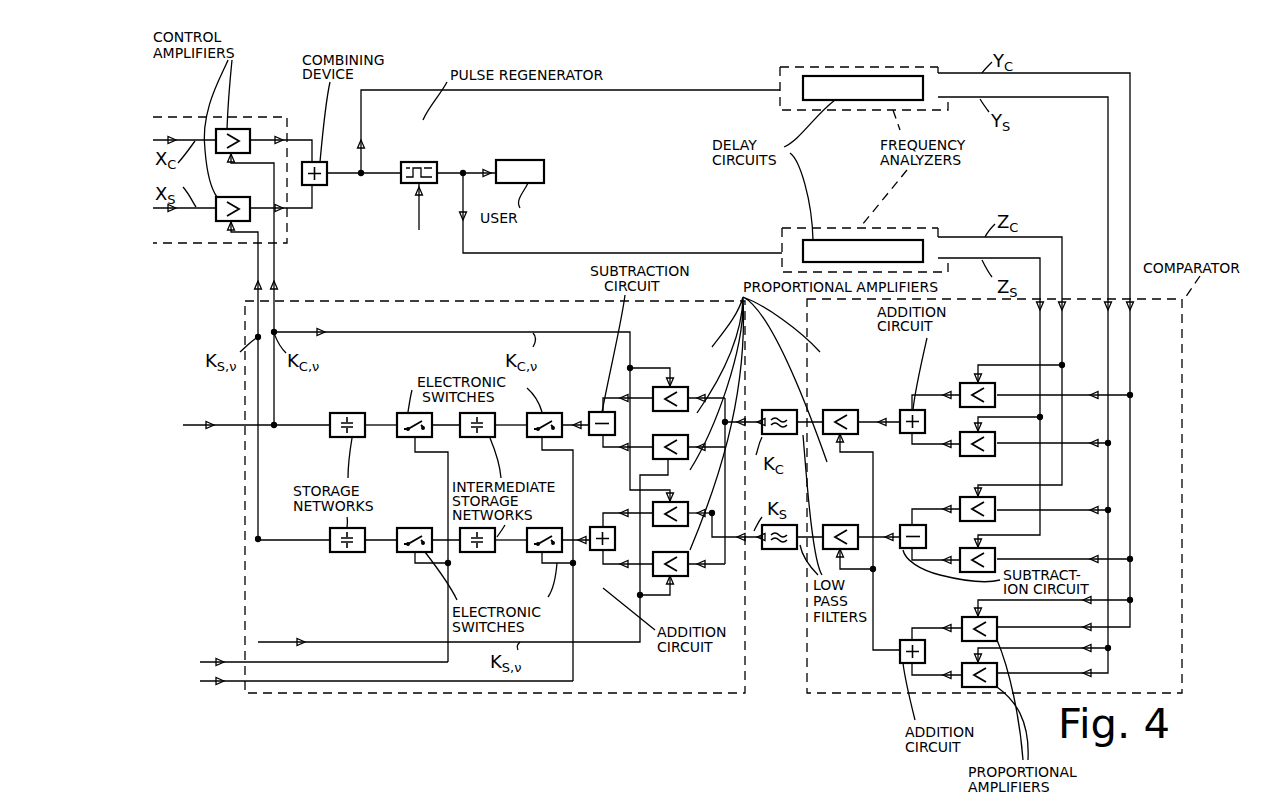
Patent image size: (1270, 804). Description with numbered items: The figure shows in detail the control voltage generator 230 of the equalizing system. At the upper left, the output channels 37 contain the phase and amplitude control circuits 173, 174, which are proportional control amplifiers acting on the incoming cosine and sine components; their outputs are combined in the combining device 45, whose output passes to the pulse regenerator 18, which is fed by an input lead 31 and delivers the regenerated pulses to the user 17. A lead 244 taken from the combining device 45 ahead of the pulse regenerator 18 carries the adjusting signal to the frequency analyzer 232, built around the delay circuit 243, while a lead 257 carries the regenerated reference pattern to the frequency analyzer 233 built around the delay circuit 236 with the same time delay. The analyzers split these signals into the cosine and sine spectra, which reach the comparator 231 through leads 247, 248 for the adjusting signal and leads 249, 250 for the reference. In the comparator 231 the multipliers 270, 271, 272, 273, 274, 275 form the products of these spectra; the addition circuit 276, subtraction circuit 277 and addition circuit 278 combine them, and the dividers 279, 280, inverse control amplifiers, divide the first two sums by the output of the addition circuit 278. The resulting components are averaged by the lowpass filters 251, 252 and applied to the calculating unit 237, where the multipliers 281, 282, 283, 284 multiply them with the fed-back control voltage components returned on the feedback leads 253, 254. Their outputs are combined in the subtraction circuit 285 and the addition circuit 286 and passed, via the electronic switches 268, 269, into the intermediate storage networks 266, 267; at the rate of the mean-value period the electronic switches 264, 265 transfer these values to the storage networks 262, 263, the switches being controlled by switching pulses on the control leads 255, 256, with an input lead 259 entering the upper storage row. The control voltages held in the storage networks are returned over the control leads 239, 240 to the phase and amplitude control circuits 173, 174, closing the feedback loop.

The user 17 is at (522, 160).
The pulse regenerator 18 is at (427, 162).
The pulse regenerator input lead 31 is at (417, 208).
The output channels 37 is at (186, 118).
The combining device 45 is at (322, 186).
The phase and amplitude control circuit 173 is at (236, 128).
The phase and amplitude control circuit 174 is at (250, 197).
The control voltage generator 230 is at (684, 48).
The comparator 231 is at (843, 680).
The frequency analyzer 232 is at (939, 66).
The frequency analyzer 233 is at (940, 228).
The delay circuit 236 is at (829, 250).
The calculating unit 237 is at (726, 680).
The control lead 239 is at (275, 272).
The control lead 240 is at (257, 272).
The delay circuit 243 is at (829, 87).
The lead 244 is at (607, 90).
The lead 247 is at (1130, 202).
The lead 248 is at (1108, 200).
The lead 249 is at (1087, 335).
The lead 250 is at (1041, 348).
The lowpass filter 251 is at (777, 410).
The lowpass filter 252 is at (780, 552).
The feedback lead 253 is at (394, 333).
The feedback lead 254 is at (393, 618).
The control lead 255 is at (240, 661).
The control lead 256 is at (235, 683).
The lead 257 is at (622, 252).
The input lead 259 is at (232, 425).
The storage network 262 is at (337, 438).
The storage network 263 is at (337, 553).
The electronic switch 264 is at (402, 438).
The electronic switch 265 is at (402, 553).
The intermediate storage network 266 is at (475, 438).
The intermediate storage network 267 is at (475, 553).
The electronic switch 268 is at (535, 438).
The electronic switch 269 is at (535, 553).
The multiplier 270 is at (968, 383).
The multiplier 271 is at (963, 438).
The multiplier 272 is at (960, 502).
The multiplier 273 is at (960, 558).
The multiplier 274 is at (958, 620).
The multiplier 275 is at (970, 668).
The addition circuit 276 is at (903, 408).
The subtraction circuit 277 is at (903, 525).
The addition circuit 278 is at (899, 640).
The divider 279 is at (790, 0).
The divider 280 is at (838, 525).
The multiplier 281 is at (687, 385).
The multiplier 282 is at (667, 435).
The multiplier 283 is at (697, 490).
The multiplier 284 is at (690, 576).
The subtraction circuit 285 is at (597, 437).
The addition circuit 286 is at (598, 552).